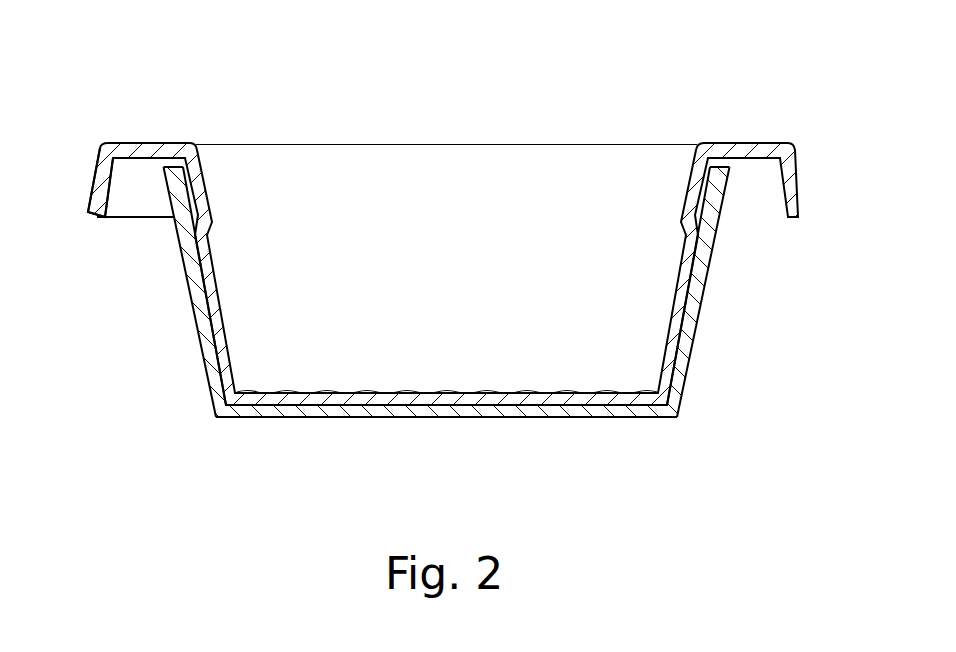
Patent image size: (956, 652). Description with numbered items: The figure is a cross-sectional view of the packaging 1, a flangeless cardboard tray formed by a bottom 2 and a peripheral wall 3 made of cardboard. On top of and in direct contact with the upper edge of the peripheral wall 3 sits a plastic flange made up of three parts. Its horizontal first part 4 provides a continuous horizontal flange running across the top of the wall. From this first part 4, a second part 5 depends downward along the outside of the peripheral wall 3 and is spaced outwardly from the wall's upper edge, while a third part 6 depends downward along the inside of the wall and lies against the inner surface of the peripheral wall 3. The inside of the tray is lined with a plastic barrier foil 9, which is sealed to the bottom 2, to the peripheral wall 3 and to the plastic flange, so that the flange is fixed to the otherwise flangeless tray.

The packaging 1 is at (733, 92).
The bottom 2 is at (450, 418).
The peripheral wall 3 is at (690, 310).
The first part 4 is at (155, 163).
The second part 5 is at (112, 192).
The third part 6 is at (189, 193).
The plastic barrier foil 9 is at (238, 392).